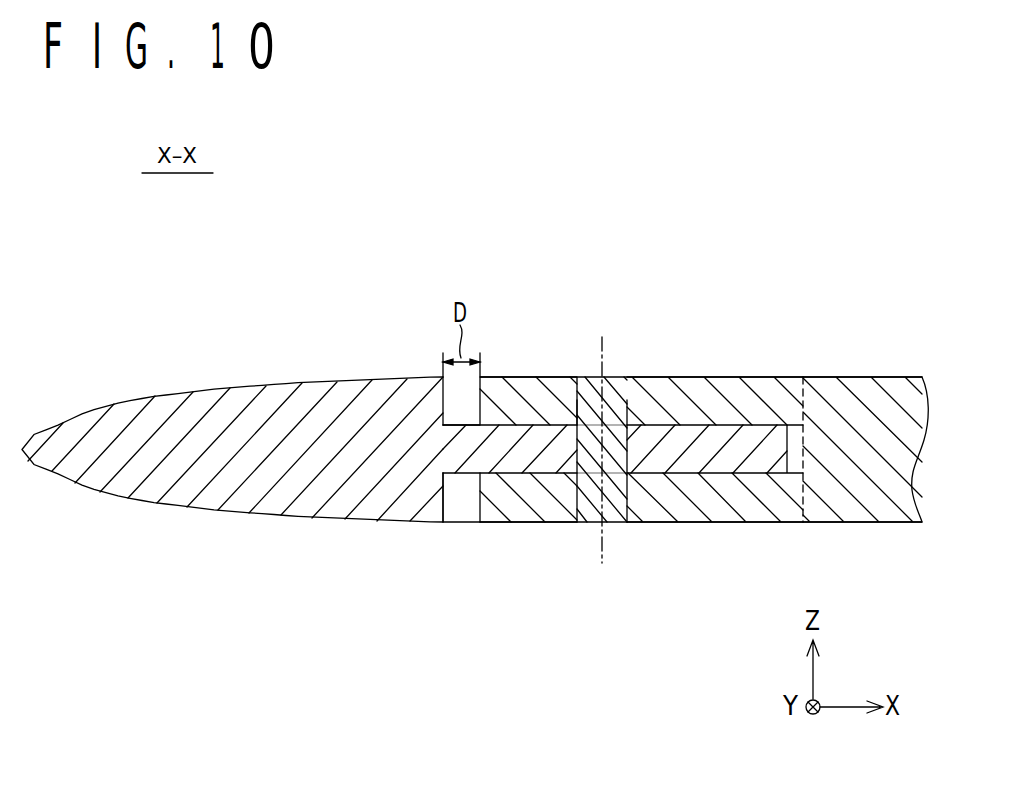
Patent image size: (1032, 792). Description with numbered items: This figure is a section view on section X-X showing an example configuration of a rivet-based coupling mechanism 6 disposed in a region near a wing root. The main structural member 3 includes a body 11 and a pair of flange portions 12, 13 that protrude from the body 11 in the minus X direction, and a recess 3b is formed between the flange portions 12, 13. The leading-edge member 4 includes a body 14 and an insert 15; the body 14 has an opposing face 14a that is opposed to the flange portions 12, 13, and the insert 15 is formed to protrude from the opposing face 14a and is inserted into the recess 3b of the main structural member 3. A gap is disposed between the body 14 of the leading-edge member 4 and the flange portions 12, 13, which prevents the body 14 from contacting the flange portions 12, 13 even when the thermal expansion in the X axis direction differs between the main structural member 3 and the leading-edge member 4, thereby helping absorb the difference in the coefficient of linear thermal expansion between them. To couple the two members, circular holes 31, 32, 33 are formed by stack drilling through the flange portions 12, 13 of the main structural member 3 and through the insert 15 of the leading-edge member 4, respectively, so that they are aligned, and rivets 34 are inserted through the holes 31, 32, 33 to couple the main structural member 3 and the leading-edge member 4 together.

The main structural member 3 is at (728, 266).
The recess 3b is at (790, 377).
The leading-edge member 4 is at (222, 351).
The rivet-based coupling mechanism 6 is at (614, 344).
The body 11 is at (853, 377).
The flange portion 12 is at (722, 377).
The flange portion 13 is at (728, 513).
The body 14 is at (322, 380).
The opposing face 14a is at (444, 507).
The insert 15 is at (508, 465).
The circular hole 31 is at (577, 398).
The circular hole 32 is at (578, 484).
The circular hole 33 is at (632, 443).
The rivet 34 is at (613, 515).